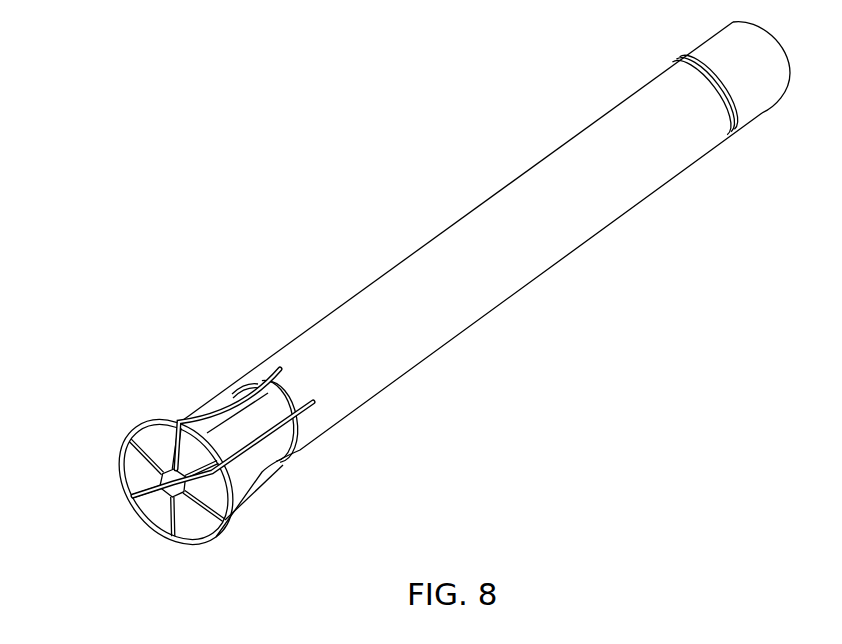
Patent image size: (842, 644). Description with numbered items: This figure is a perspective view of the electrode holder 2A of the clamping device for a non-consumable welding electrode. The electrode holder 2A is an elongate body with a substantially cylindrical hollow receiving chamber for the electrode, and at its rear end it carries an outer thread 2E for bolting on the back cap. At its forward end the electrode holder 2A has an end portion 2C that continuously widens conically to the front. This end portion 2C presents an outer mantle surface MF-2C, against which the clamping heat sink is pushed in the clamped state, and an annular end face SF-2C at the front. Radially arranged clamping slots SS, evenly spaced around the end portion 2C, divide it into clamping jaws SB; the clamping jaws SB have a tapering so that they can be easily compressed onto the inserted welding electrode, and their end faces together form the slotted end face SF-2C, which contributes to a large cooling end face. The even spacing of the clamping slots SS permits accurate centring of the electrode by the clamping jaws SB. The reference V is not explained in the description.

The electrode holder 2A is at (477, 323).
The thread 2E is at (760, 113).
The end portion 2C is at (245, 510).
The mantle surface MF-2C is at (162, 414).
The annular end face SF-2C is at (199, 534).
The clamping jaws SB is at (213, 440).
The wires V is at (264, 376).
The clamping slots SS is at (311, 412).